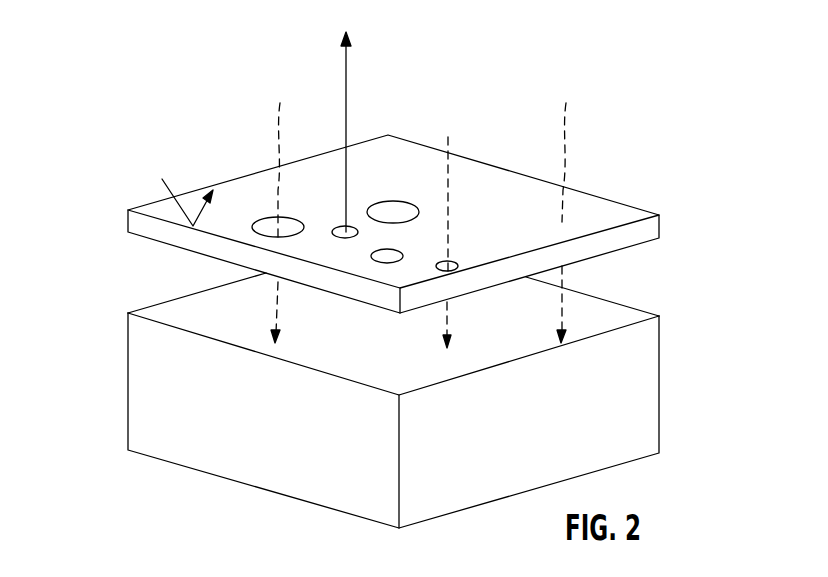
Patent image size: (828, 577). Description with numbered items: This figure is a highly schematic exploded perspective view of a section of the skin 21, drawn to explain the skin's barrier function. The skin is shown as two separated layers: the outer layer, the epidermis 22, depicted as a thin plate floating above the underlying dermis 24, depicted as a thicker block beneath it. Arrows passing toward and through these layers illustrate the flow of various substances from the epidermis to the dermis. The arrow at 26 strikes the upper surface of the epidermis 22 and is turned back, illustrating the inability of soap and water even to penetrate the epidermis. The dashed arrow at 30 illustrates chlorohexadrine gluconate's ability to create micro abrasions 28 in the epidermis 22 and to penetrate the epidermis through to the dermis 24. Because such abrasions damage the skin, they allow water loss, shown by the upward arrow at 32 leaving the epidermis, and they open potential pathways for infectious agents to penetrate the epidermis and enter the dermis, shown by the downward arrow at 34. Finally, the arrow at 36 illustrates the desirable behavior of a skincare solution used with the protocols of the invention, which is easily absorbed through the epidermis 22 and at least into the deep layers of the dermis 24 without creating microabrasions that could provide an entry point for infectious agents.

The section of the skin 21 is at (665, 163).
The epidermis 22 is at (150, 232).
The dermis 24 is at (143, 367).
The arrow illustrating inability of soap and water to penetrate 26 is at (160, 190).
The micro abrasions 28 is at (262, 220).
The arrow illustrating chlorohexadrine gluconate penetration 30 is at (275, 128).
The arrow illustrating water loss 32 is at (346, 103).
The arrow illustrating pathway for infectious agents 34 is at (448, 172).
The arrow illustrating absorption of solution without microabrasions 36 is at (567, 152).